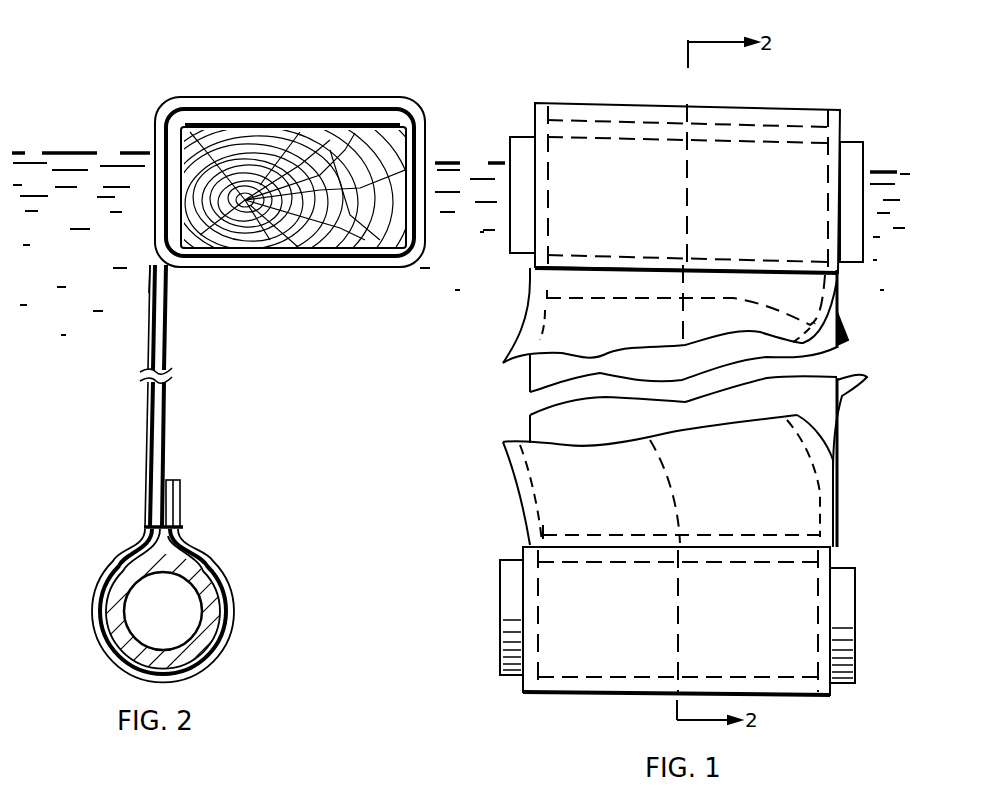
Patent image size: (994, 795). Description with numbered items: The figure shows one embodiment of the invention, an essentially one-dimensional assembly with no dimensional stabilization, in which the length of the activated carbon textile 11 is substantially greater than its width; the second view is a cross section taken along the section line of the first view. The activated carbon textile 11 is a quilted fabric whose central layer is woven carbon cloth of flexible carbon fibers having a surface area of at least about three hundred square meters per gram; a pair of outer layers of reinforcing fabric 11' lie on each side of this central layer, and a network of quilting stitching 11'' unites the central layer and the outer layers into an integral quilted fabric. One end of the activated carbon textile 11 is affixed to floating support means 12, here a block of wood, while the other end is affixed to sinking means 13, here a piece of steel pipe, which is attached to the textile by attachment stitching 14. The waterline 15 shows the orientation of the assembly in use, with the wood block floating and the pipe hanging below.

In FIG. 2, the activated carbon textile 11 is at (187, 324).
In FIG. 1, the activated carbon textile 11 is at (631, 354).
In FIG. 2, the reinforcing fabric 11' is at (154, 454).
In FIG. 1, the reinforcing fabric 11' is at (858, 429).
In FIG. 1, the quilting stitching 11'' is at (620, 321).
In FIG. 2, the floating support means 12 is at (300, 158).
In FIG. 1, the floating support means 12 is at (850, 140).
In FIG. 2, the sinking means 13 is at (207, 617).
In FIG. 1, the sinking means 13 is at (500, 607).
In FIG. 2, the attachment stitching 14 is at (147, 527).
In FIG. 1, the attachment stitching 14 is at (575, 535).
In FIG. 2, the waterline 15 is at (70, 153).
In FIG. 1, the waterline 15 is at (886, 170).